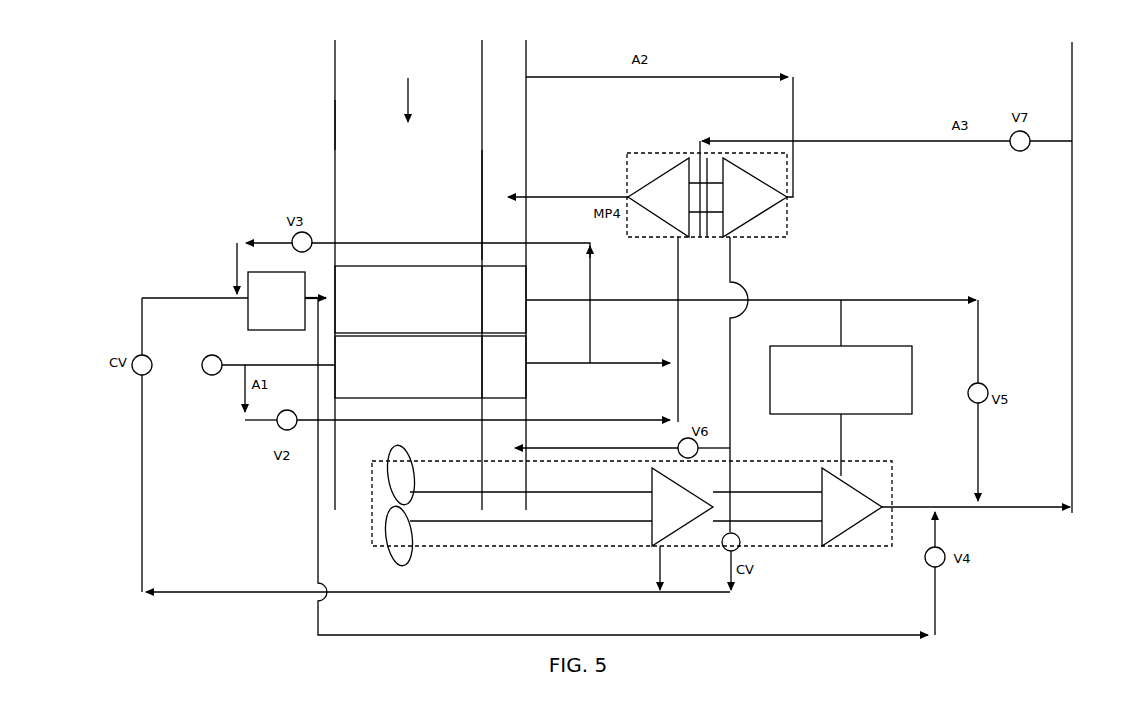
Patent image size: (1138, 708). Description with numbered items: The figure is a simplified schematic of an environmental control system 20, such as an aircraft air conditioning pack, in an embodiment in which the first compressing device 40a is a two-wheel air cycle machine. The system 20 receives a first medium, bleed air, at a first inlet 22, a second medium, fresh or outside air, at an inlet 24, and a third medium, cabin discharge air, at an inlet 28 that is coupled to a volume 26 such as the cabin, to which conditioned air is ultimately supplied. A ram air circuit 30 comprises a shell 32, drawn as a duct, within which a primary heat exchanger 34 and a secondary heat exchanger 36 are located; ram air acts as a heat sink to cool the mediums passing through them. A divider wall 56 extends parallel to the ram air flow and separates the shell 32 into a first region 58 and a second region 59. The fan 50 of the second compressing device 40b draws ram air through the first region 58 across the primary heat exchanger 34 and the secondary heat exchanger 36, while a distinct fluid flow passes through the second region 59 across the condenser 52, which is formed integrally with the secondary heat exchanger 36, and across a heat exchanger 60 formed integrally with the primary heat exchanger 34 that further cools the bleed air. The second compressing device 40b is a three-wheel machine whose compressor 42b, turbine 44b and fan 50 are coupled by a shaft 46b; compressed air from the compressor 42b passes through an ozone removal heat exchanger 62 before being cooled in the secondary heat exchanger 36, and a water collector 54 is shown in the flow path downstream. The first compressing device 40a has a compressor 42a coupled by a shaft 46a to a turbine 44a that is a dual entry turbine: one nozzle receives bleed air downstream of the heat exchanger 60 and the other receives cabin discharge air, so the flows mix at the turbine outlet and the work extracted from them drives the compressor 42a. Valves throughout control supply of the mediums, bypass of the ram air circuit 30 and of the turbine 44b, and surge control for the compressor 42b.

The environmental control system 20 is at (148, 92).
The first inlet 22 is at (203, 356).
The inlet 24 is at (527, 70).
The volume 26 is at (1101, 406).
The inlet 28 is at (1074, 140).
The ram air circuit 30 is at (322, 70).
The shell 32 is at (334, 125).
The primary heat exchanger 34 is at (430, 367).
The secondary heat exchanger 36 is at (430, 299).
The first compressing device 40a is at (732, 185).
The second compressing device 40b is at (678, 519).
The compressor 42a is at (748, 178).
The compressor 42b is at (672, 541).
The turbine 44a is at (666, 237).
The turbine 44b is at (885, 509).
The shaft 46a is at (730, 280).
The shaft 46b is at (538, 510).
The fan 50 is at (405, 536).
The condenser 52 is at (496, 299).
The water collector 54 is at (841, 388).
The divider wall 56 is at (482, 147).
The first region 58 is at (405, 114).
The second region 59 is at (493, 205).
The heat exchanger 60 is at (496, 367).
The ozone removal heat exchanger 62 is at (234, 301).